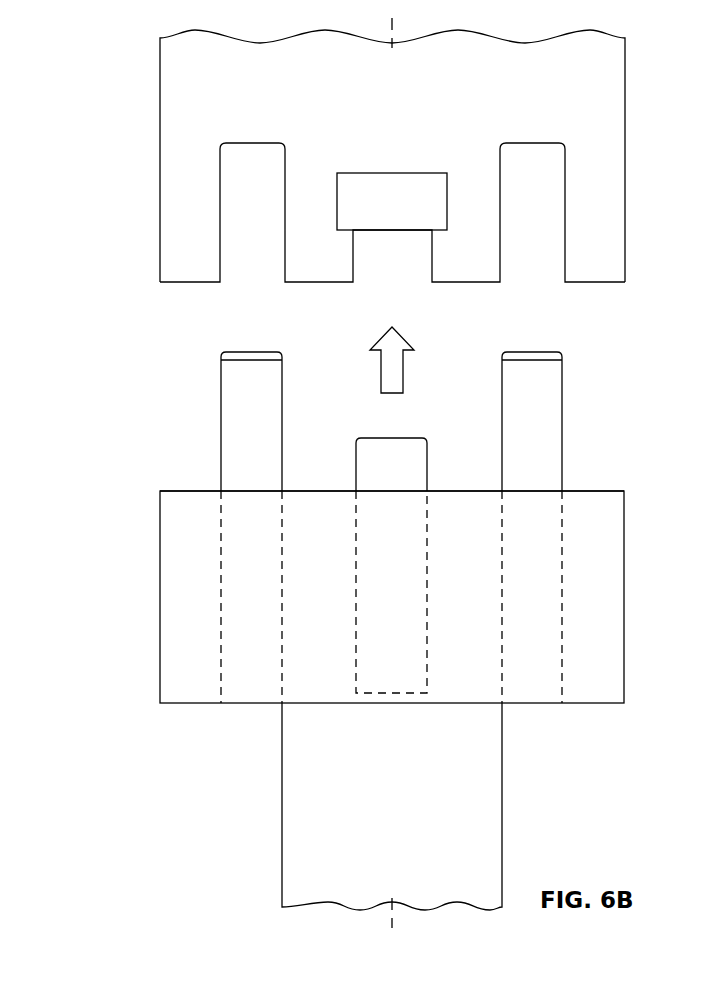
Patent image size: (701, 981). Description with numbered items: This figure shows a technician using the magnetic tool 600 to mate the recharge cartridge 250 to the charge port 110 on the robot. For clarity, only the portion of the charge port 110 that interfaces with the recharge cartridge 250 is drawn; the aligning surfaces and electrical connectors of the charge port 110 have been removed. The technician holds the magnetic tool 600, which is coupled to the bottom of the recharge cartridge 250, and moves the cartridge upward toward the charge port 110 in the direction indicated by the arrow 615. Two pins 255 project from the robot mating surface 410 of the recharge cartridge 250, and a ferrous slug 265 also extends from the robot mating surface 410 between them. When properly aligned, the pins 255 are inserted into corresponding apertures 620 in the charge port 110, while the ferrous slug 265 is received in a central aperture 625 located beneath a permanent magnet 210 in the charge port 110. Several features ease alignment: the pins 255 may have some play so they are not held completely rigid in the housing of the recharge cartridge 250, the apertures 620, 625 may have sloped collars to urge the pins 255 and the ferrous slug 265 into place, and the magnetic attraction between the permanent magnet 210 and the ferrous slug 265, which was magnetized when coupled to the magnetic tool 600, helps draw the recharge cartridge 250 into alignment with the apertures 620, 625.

The charge port 110 is at (159, 141).
The permanent magnet 210 is at (368, 172).
The apertures 620 is at (557, 331).
The aperture 625 is at (398, 282).
The arrow 615 is at (408, 343).
The pins 255 is at (604, 405).
The robot mating surface 410 is at (182, 483).
The ferrous slug 265 is at (356, 467).
The recharge cartridge 250 is at (158, 640).
The magnetic tool 600 is at (503, 836).